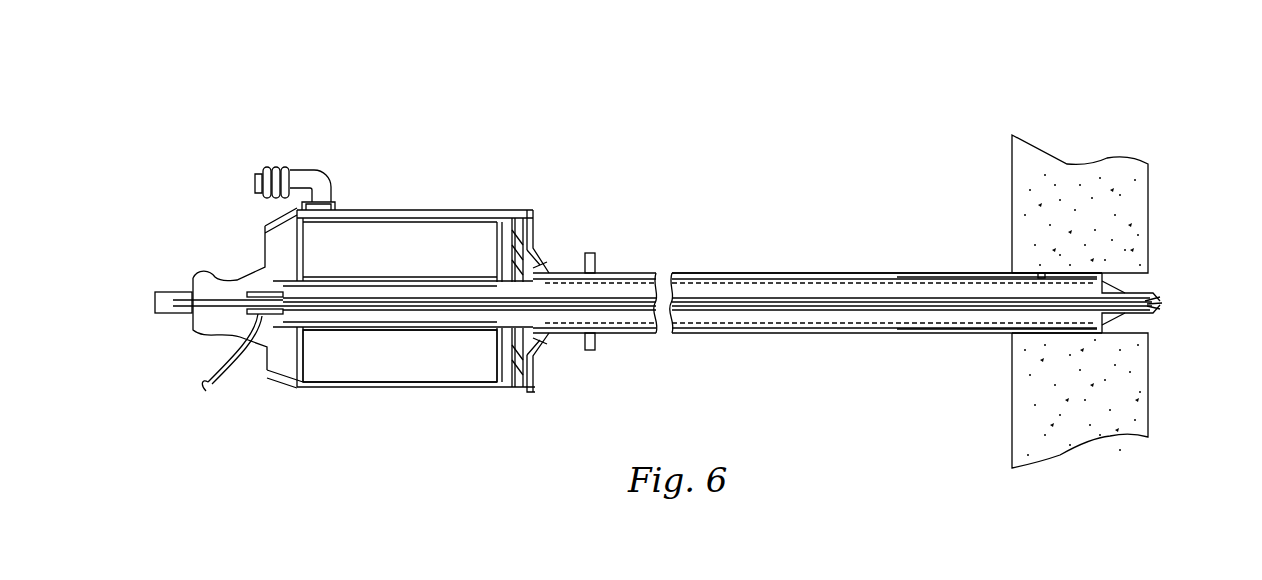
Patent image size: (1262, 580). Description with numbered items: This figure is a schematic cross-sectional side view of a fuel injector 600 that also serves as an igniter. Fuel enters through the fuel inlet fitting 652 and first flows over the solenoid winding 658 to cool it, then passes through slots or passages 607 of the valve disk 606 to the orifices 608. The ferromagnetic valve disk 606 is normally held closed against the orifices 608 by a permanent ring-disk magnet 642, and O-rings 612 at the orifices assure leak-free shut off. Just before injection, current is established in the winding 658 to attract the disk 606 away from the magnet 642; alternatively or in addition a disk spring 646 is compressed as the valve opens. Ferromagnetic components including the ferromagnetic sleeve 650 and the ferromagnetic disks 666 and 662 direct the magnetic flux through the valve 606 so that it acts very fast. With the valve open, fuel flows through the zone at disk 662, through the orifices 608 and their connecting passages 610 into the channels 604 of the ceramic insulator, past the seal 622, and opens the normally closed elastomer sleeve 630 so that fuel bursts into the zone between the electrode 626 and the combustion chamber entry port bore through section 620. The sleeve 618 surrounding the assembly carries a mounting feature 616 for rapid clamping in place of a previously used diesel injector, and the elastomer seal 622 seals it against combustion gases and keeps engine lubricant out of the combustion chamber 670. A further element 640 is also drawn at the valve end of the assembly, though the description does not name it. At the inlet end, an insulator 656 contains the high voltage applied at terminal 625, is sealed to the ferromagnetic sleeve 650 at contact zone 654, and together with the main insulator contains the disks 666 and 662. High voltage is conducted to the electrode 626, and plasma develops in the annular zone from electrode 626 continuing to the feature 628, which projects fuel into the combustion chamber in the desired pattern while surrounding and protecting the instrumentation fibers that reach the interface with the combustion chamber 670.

The fuel injector 600 is at (628, 98).
The channels 604 is at (787, 325).
The valve disk 606 is at (507, 227).
The slots or passages 607 is at (524, 368).
The orifices 608 is at (597, 345).
The passages 610 is at (547, 277).
The O-rings 612 is at (547, 342).
The mounting feature 616 is at (600, 263).
The sleeve 618 is at (790, 273).
The section 620 is at (1100, 172).
The seal 622 is at (1040, 273).
The terminal 625 is at (165, 292).
The electrode 626 is at (1112, 287).
The feature 628 is at (1130, 313).
The elastomer sleeve 630 is at (963, 330).
The end nut 640 is at (537, 370).
The permanent ring-disk magnet 642 is at (532, 230).
The disk spring 646 is at (513, 230).
The ferromagnetic sleeve 650 is at (410, 210).
The fuel inlet fitting 652 is at (328, 180).
The contact zone 654 is at (266, 228).
The insulator 656 is at (280, 255).
The solenoid winding 658 is at (363, 367).
The ferromagnetic disk 662 is at (500, 358).
The ferromagnetic disk 666 is at (307, 357).
The combustion chamber 670 is at (1192, 412).